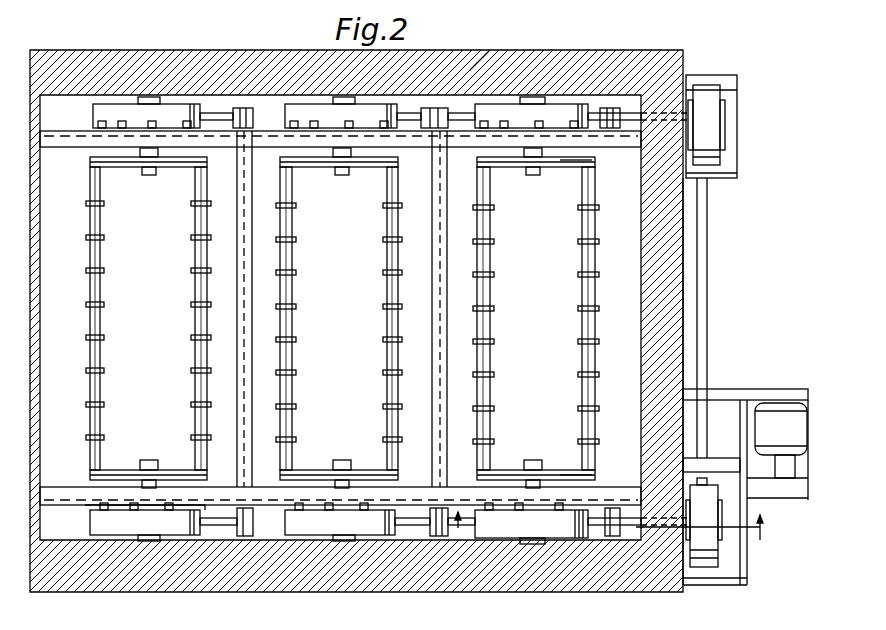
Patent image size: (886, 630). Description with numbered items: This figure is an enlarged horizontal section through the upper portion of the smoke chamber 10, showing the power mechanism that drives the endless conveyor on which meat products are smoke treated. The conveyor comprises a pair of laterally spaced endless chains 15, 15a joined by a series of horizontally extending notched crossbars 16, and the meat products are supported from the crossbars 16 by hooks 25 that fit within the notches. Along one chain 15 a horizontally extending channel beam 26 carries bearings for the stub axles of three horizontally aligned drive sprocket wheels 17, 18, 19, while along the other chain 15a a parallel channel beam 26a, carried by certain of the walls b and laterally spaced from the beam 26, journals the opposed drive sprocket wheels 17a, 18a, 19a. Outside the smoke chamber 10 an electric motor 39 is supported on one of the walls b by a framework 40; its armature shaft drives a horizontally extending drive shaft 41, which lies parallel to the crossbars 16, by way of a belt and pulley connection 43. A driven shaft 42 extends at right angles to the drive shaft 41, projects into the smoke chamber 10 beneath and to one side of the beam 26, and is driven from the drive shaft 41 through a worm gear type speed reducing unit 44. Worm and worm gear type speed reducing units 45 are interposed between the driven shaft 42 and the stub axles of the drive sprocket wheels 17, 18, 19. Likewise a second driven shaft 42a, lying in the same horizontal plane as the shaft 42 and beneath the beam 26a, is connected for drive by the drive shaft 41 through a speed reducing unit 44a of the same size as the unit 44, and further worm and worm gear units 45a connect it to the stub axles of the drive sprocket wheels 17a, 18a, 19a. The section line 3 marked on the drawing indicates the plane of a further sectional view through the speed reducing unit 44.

The smoke chamber 10 is at (414, 100).
The walls b is at (490, 62).
The channel beam 26a is at (60, 140).
The channel beam 26 is at (49, 486).
The crossbars 16 is at (101, 411).
The hooks 25 is at (298, 404).
The drive sprocket wheel 19a is at (139, 162).
The drive sprocket wheel 18a is at (330, 163).
The drive sprocket wheel 17a is at (505, 168).
The endless chain 15a is at (567, 168).
The drive sprocket wheel 19 is at (120, 470).
The drive sprocket wheel 18 is at (310, 470).
The drive sprocket wheel 17 is at (500, 472).
The endless chain 15 is at (566, 472).
The worm and worm gear type speed reducing units 45a is at (180, 105).
The worm and worm gear type speed reducing units 45 is at (105, 525).
The driven shaft 42a is at (628, 118).
The driven shaft 42 is at (628, 530).
The worm gear type speed reducing unit 44a is at (712, 145).
The worm gear type speed reducing unit 44 is at (704, 567).
The drive shaft 41 is at (708, 366).
The belt and pulley connection 43 is at (724, 472).
The framework 40 is at (776, 396).
The electric motor 39 is at (781, 440).
The section line 3- 3 is at (612, 532).